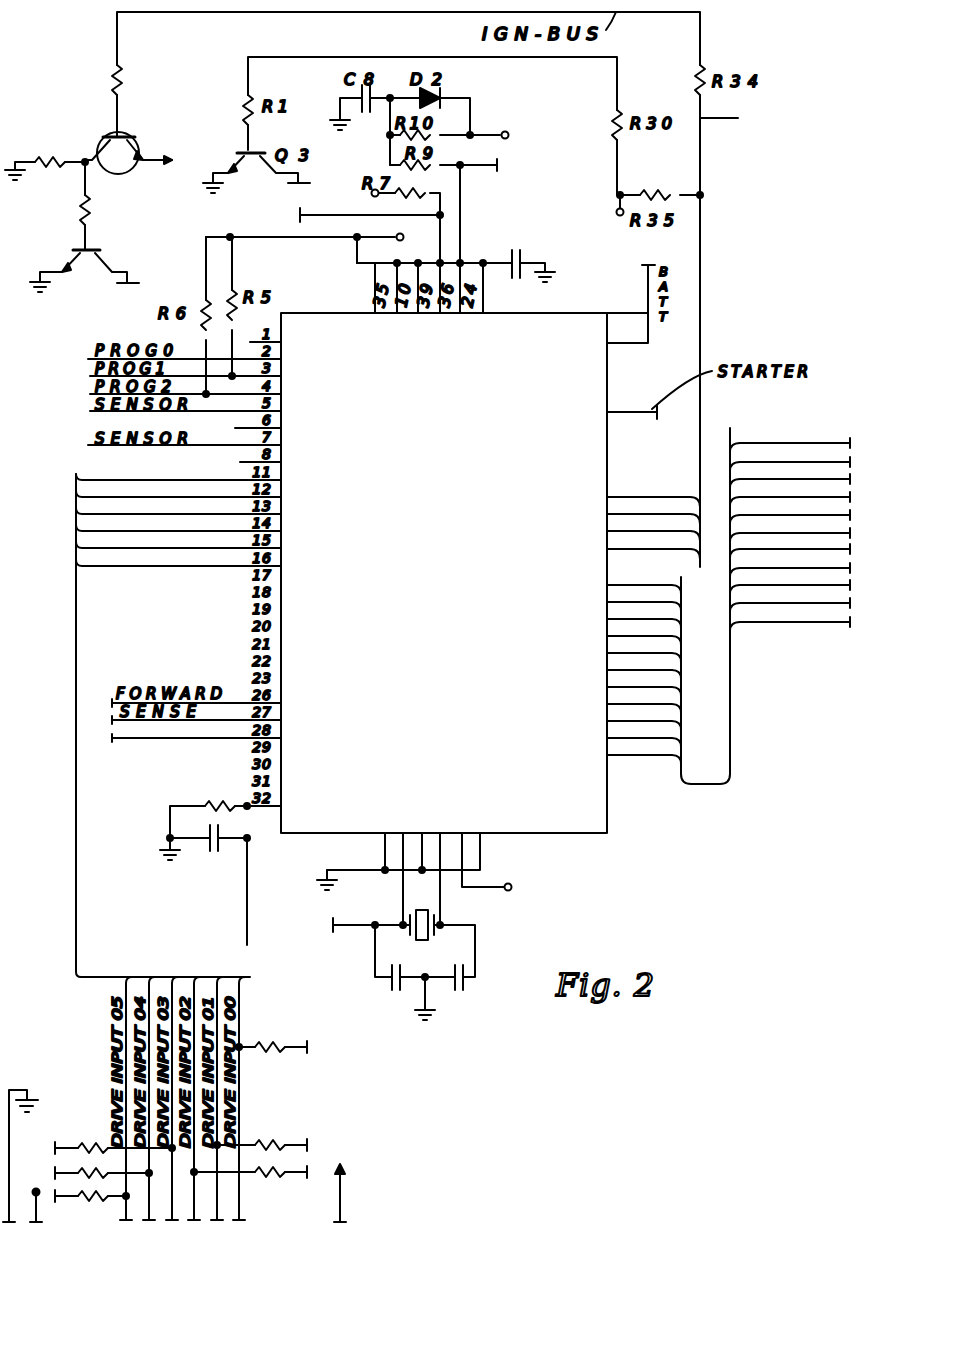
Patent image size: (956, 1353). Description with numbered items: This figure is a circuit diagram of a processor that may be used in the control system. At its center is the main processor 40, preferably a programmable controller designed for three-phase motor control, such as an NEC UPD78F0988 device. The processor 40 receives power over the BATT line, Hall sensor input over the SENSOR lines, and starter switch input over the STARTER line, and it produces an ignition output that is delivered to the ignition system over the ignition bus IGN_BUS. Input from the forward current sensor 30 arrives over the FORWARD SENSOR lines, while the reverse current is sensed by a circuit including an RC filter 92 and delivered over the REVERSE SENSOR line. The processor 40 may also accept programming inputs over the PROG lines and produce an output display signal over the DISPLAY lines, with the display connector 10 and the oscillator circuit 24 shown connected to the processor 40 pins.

The forward current sensor 30 is at (74, 44).
The RC filter 92 is at (186, 886).
The crystal oscillator circuit 24 is at (393, 1020).
The main processor 40 is at (561, 818).
The display 10 is at (728, 605).